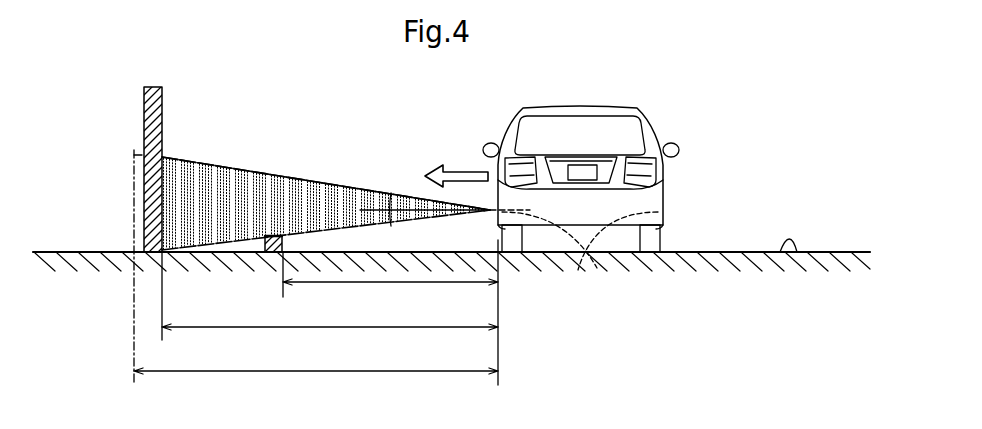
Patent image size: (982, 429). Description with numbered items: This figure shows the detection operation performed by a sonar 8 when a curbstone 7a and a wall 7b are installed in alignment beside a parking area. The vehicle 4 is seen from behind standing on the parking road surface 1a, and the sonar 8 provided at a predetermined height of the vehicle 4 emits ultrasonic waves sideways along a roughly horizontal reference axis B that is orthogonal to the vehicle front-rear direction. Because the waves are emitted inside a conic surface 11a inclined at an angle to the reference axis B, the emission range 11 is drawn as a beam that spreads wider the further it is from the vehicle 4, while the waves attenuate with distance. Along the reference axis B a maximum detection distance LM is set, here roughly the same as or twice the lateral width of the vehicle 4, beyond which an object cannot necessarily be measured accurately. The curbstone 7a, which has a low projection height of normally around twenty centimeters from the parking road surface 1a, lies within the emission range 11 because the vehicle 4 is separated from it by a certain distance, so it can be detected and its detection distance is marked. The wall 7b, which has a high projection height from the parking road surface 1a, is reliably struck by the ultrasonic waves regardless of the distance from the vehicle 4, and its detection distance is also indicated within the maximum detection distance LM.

The parking road surface 1a is at (797, 253).
The vehicle 4 is at (513, 130).
The curbstone 7a is at (272, 236).
The wall 7b is at (143, 133).
The sonar 8 is at (586, 272).
The emission range 11 is at (344, 203).
The conic surface 11a is at (291, 175).
The reference axis B is at (389, 226).
The maximum detection distance LM is at (316, 319).